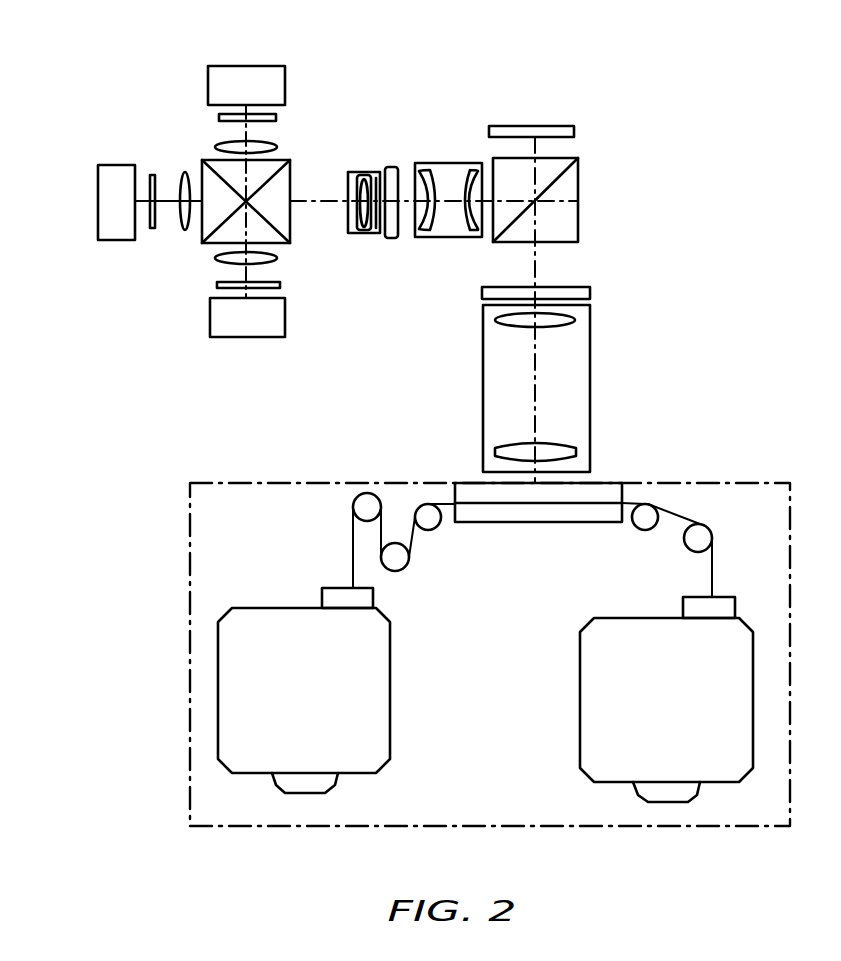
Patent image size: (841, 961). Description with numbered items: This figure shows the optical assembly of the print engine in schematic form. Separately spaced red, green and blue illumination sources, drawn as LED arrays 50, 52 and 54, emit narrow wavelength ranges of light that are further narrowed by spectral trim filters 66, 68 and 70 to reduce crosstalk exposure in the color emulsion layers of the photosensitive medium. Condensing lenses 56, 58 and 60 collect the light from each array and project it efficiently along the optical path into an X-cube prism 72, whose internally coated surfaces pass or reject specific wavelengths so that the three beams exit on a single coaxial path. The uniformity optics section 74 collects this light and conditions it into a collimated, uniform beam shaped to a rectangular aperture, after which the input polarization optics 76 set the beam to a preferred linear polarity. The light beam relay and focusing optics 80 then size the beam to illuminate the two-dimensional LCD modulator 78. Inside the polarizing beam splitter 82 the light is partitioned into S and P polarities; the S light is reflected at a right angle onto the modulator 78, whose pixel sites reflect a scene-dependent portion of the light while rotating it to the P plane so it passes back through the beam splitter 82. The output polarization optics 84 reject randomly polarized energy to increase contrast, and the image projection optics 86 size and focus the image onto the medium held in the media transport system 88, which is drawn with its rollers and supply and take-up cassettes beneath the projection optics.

The red LED array 50 is at (226, 66).
The green LED array 52 is at (97, 200).
The blue LED array 54 is at (237, 338).
The condensing lens 56 is at (272, 146).
The condensing lens 58 is at (215, 260).
The condensing lens 60 is at (187, 178).
The spectral trim filter 66 is at (220, 117).
The spectral trim filter 68 is at (153, 232).
The spectral trim filter 70 is at (283, 286).
The X-cube prism 72 is at (291, 236).
The uniformity optics section 74 is at (360, 172).
The input polarization optics 76 is at (392, 167).
The two-dimensional LCD modulator 78 is at (548, 126).
The light beam relay and focusing optics 80 is at (447, 238).
The polarizing beam splitter 82 is at (579, 199).
The output polarization optics 84 is at (590, 292).
The image projection optics 86 is at (590, 438).
The media transport system 88 is at (190, 483).